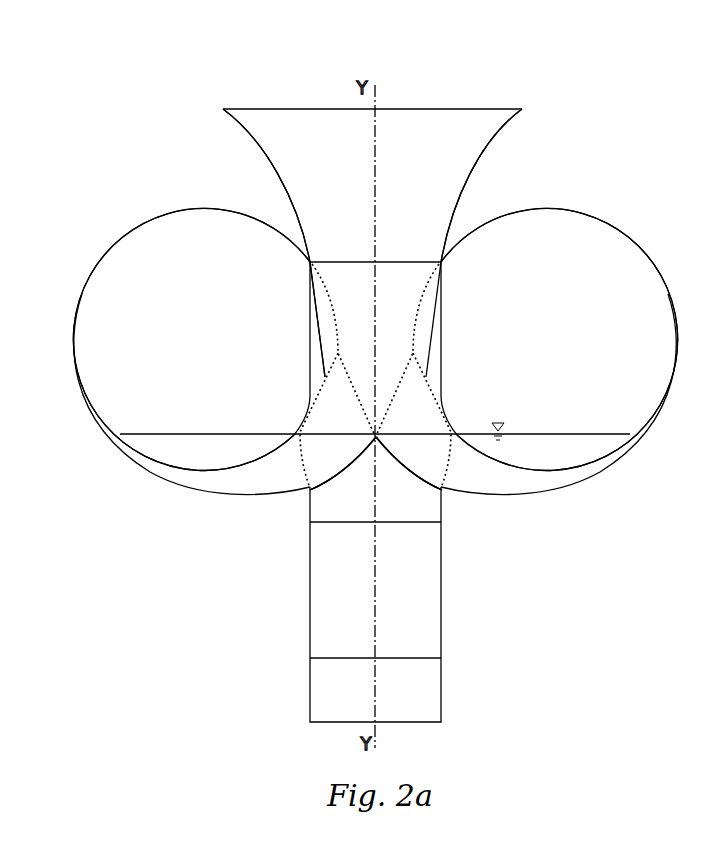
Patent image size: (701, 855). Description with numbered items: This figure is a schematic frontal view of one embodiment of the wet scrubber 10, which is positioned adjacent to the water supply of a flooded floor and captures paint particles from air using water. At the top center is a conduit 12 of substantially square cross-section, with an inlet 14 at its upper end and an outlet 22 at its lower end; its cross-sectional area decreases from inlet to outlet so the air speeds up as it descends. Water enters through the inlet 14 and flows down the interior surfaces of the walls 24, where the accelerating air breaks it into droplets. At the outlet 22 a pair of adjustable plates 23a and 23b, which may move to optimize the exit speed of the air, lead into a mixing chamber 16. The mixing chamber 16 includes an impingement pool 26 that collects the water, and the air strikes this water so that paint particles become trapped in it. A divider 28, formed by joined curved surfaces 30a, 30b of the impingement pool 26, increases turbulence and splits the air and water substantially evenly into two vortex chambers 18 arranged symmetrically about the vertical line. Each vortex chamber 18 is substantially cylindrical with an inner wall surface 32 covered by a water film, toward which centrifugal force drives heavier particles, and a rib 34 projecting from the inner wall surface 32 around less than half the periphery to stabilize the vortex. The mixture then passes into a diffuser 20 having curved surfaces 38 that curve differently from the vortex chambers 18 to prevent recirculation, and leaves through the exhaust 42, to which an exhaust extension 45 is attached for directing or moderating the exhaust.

The wet scrubber 10 is at (644, 157).
The conduit 12 is at (362, 194).
The inlet 14 is at (388, 106).
The mixing chamber 16 is at (364, 401).
The vortex chamber 18 is at (194, 349).
The diffuser 20 is at (367, 484).
The outlet 22 is at (386, 259).
The adjustable plate 23a is at (326, 313).
The adjustable plate 23b is at (425, 313).
The walls 24 is at (285, 168).
The impingement pool 26 is at (314, 461).
The divider 28 is at (379, 432).
The curved surface 30a is at (358, 473).
The curved surface 30b is at (394, 473).
The inner wall surface 32 is at (143, 233).
The rib 34 is at (113, 393).
The curved surfaces 38 is at (352, 383).
The exhaust 42 is at (389, 528).
The exhaust extension 45 is at (367, 634).